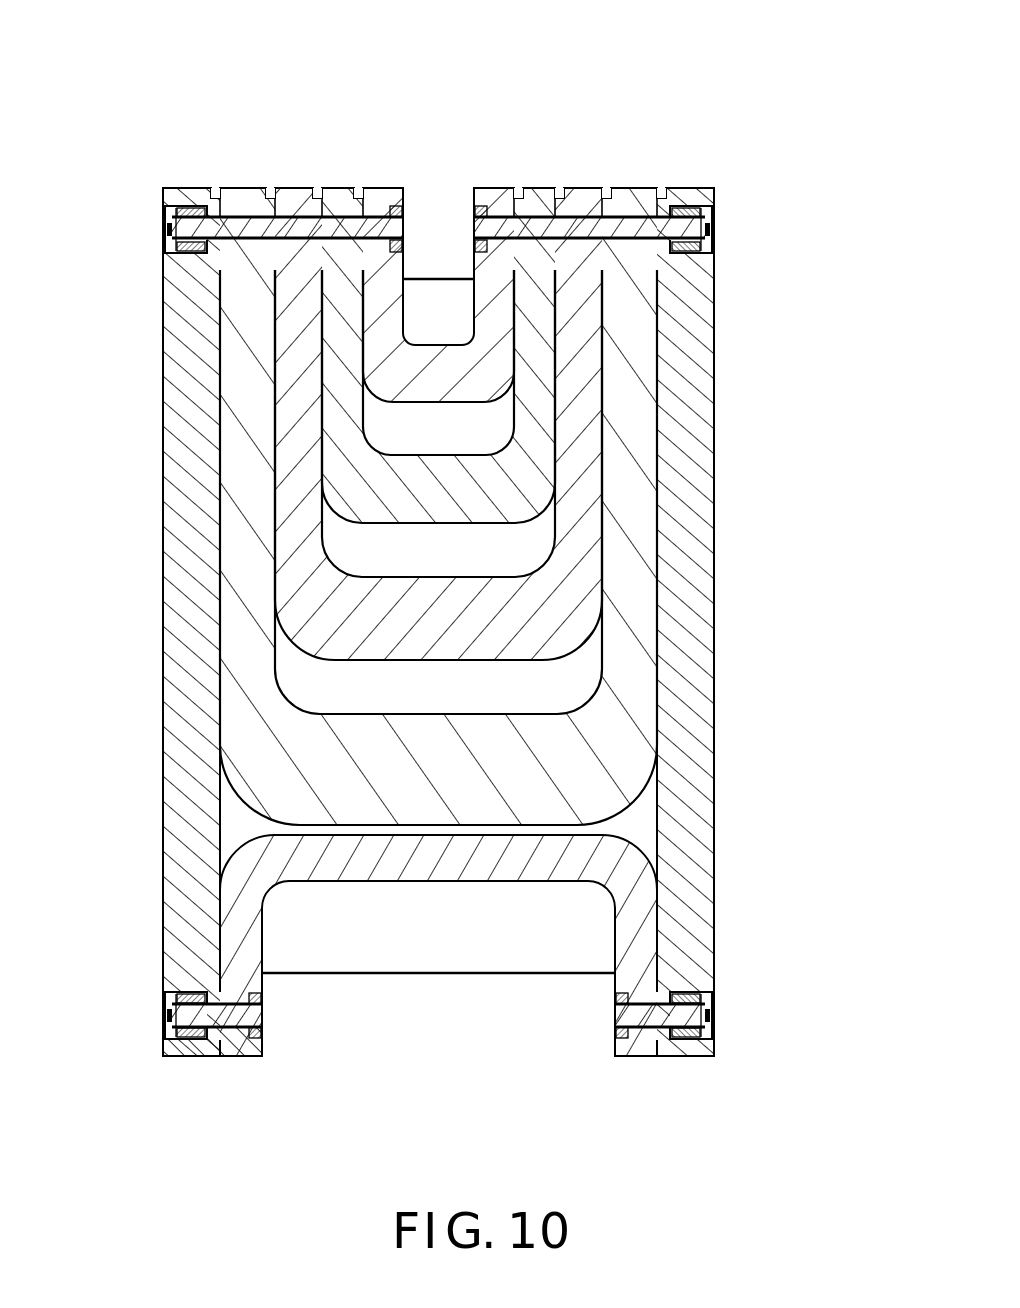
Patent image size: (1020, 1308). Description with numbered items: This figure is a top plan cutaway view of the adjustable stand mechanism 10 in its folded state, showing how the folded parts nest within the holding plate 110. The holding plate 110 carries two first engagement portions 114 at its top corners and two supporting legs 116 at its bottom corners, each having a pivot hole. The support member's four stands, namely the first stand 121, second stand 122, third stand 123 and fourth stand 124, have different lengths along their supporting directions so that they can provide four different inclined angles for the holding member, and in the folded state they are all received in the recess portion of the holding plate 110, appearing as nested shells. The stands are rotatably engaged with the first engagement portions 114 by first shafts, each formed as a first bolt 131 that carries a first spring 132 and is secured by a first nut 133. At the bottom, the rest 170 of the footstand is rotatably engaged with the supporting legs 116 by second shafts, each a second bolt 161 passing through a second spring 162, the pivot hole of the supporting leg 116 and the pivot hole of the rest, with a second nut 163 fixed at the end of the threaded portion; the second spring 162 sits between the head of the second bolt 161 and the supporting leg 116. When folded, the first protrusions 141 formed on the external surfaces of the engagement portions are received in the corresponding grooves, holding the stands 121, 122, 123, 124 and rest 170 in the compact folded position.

The adjustable stand mechanism 10 is at (435, 70).
The holding plate 110 is at (357, 942).
The first engagement portion 114 is at (173, 192).
The supporting leg 116 is at (707, 1048).
The first stand 121 is at (630, 683).
The second stand 122 is at (572, 582).
The third stand 123 is at (527, 470).
The fourth stand 124 is at (495, 322).
The first bolt 131 is at (693, 227).
The first spring 132 is at (690, 212).
The first nut 133 is at (478, 210).
The first protrusion 141 is at (270, 205).
The second bolt 161 is at (685, 1012).
The second spring 162 is at (685, 1038).
The second nut 163 is at (615, 1035).
The rest 170 is at (498, 855).